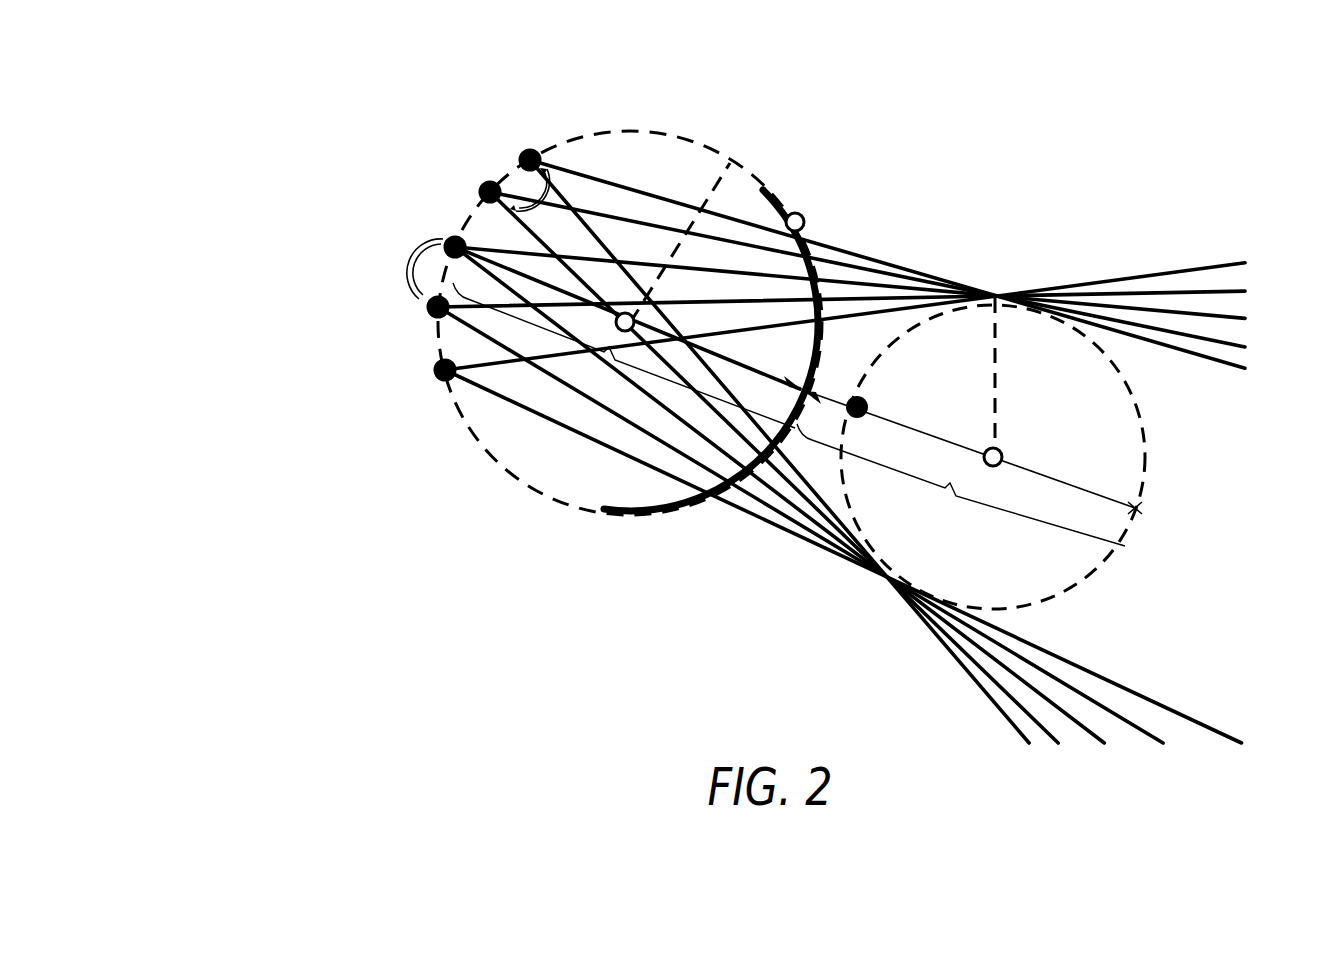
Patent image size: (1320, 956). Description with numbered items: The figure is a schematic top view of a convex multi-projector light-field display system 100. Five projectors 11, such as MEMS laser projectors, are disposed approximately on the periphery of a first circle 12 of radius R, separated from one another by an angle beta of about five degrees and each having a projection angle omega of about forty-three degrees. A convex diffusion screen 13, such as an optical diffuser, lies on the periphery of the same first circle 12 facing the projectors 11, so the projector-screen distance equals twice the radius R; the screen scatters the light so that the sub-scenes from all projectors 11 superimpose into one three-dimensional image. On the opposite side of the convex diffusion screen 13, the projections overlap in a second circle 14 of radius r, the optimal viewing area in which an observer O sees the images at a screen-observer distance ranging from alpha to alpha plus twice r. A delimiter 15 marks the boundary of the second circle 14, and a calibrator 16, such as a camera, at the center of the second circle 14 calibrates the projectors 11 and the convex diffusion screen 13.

The convex multi-projector light-field display system 100 is at (256, 92).
The projectors 11 is at (444, 380).
The first circle 12 is at (633, 130).
The convex diffusion screen 13 is at (628, 510).
The second circle 14 is at (1147, 470).
The delimiter 15 is at (805, 222).
The calibrator 16 is at (1003, 455).